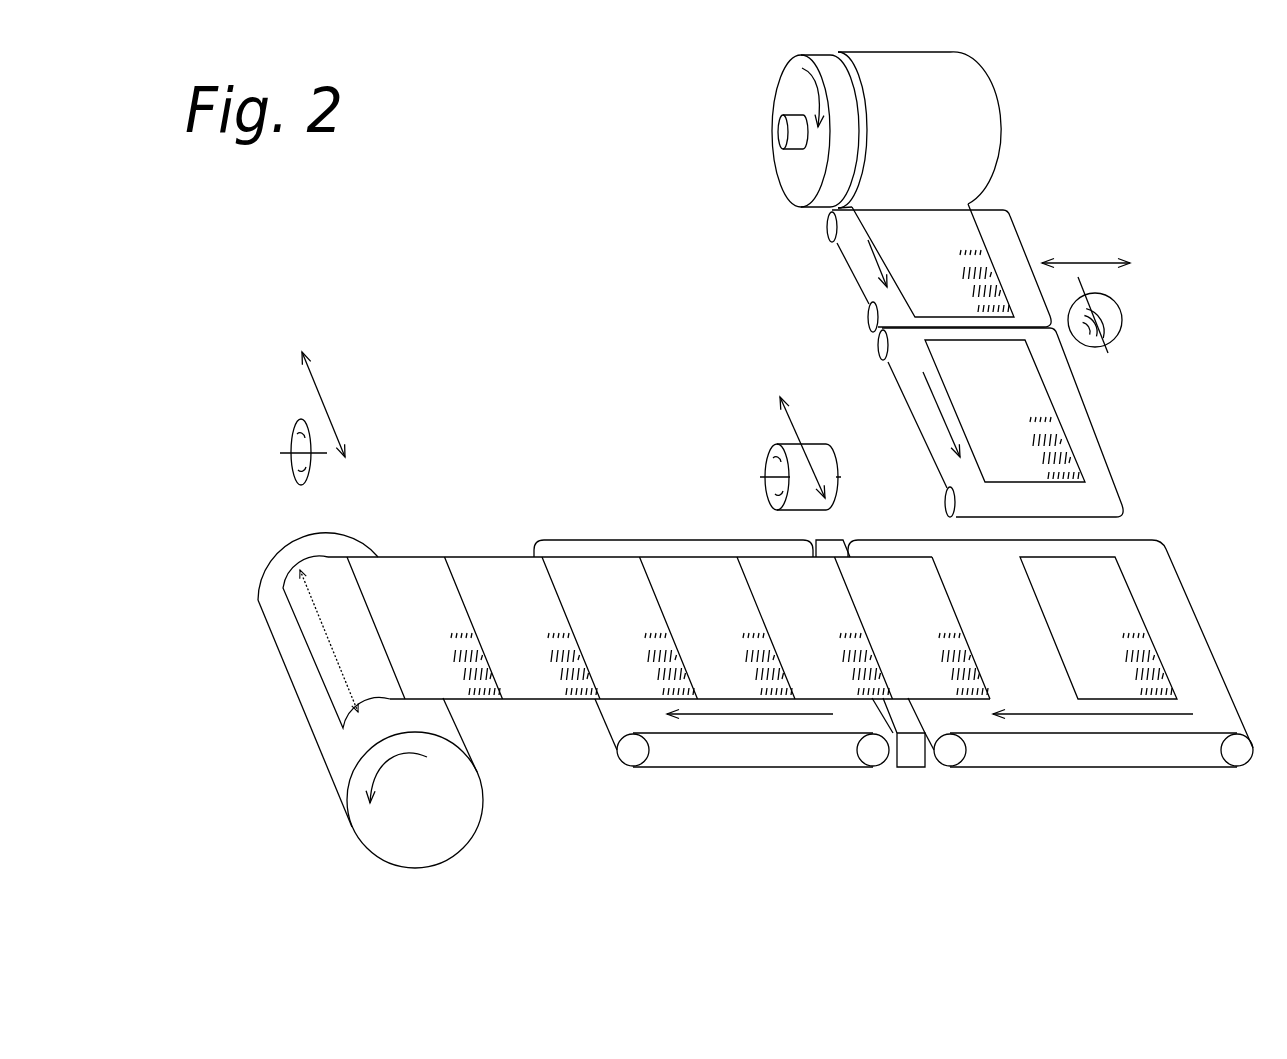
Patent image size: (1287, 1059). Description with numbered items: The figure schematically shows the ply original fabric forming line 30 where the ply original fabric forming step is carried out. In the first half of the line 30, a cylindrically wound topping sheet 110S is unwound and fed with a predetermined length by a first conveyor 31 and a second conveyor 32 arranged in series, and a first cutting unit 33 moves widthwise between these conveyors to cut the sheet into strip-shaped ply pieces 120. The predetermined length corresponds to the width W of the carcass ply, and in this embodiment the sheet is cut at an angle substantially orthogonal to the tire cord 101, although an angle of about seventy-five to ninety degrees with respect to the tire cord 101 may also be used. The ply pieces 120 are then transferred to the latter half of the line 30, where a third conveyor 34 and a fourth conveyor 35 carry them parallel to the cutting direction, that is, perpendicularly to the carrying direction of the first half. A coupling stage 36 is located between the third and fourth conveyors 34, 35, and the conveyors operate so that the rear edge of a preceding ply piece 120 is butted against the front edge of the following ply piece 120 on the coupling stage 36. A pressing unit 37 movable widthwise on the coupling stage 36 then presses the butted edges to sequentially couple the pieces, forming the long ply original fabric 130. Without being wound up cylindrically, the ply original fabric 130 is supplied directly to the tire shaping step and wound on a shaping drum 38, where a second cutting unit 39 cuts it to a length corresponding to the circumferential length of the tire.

The ply original fabric forming line 30 is at (702, 372).
The first conveyor 31 is at (848, 272).
The second conveyor 32 is at (910, 415).
The first cutting unit 33 is at (1115, 327).
The third conveyor 34 is at (1020, 758).
The fourth conveyor 35 is at (740, 760).
The coupling stage 36 is at (910, 760).
The pressing unit 37 is at (775, 445).
The shaping drum 38 is at (365, 543).
The second cutting unit 39 is at (292, 437).
The tire cord 101 is at (990, 265).
The sheet roll 110S is at (953, 137).
The ply piece 120 is at (1120, 622).
The ply original fabric 130 is at (602, 598).